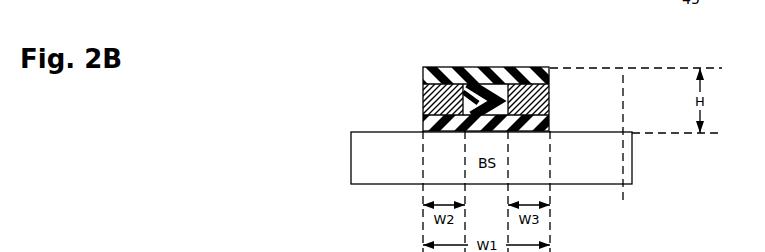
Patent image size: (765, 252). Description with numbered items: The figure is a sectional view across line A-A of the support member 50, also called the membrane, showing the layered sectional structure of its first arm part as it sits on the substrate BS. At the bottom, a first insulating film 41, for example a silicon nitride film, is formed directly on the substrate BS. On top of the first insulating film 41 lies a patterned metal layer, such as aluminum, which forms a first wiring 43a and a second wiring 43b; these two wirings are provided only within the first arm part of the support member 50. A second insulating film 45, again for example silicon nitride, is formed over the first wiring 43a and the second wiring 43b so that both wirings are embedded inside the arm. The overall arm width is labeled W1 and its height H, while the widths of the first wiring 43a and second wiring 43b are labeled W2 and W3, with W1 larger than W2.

The support member 50 is at (310, 64).
The first insulating film 41 is at (426, 123).
The first wiring 43a is at (423, 100).
The second wiring 43b is at (549, 108).
The second insulating film 45 is at (494, 95).